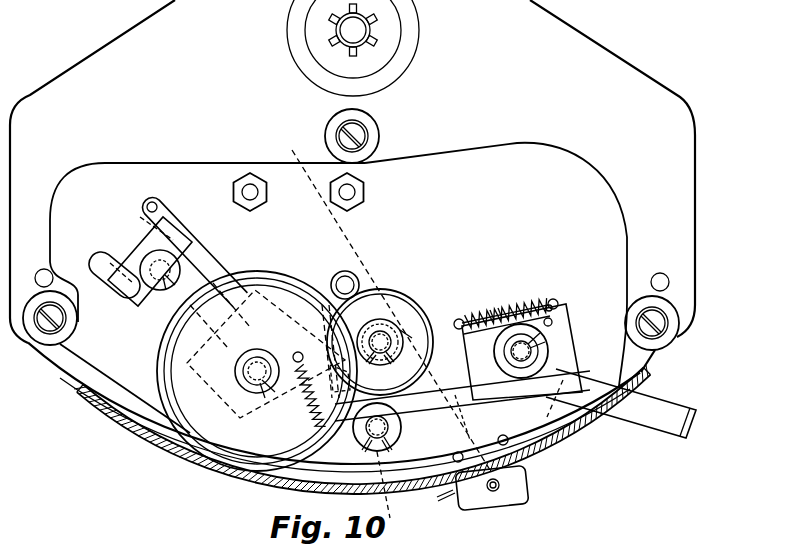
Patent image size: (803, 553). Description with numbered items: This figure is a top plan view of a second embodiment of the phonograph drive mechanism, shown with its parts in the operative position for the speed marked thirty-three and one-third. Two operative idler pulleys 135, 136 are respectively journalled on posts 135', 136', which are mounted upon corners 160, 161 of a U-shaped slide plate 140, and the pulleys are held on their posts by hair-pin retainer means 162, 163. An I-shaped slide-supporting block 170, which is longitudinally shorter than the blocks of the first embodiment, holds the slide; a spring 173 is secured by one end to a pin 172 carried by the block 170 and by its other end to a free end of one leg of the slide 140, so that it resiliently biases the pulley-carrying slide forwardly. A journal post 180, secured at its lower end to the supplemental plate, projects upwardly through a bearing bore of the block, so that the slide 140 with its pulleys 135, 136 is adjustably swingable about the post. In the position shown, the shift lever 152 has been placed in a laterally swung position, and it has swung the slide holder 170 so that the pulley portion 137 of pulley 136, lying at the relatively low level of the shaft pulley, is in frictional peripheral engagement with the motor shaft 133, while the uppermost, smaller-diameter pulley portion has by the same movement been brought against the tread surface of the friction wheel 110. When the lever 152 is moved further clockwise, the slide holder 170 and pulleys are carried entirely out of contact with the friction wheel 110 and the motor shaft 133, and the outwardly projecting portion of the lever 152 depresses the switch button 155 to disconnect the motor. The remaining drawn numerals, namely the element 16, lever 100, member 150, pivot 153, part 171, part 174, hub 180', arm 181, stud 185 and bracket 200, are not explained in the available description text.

The axis line 16 is at (318, 146).
The lever 100 is at (215, 262).
The friction wheel 110 is at (320, 326).
The motor shaft 133 is at (342, 272).
The idler pulley 135 is at (400, 427).
The post 135' is at (357, 440).
The idler pulley 136 is at (406, 305).
The post 136' is at (430, 311).
The pulley portion 137 is at (380, 325).
The slide plate 140 is at (451, 364).
The slide plate 150 is at (505, 352).
The shift lever 152 is at (612, 422).
The pivot pin 153 is at (552, 320).
The switch button 155 is at (500, 485).
The corner 160 is at (376, 320).
The corner 161 is at (393, 497).
The hair-pin retainer means 162 is at (380, 447).
The hair-pin retainer means 163 is at (381, 354).
The slide-supporting block 170 is at (502, 312).
The spring coil 171 is at (492, 305).
The pin 172 is at (455, 318).
The spring 173 is at (498, 308).
The anchor pin 174 is at (562, 300).
The journal post 180 is at (547, 349).
The roller hub 180' is at (566, 347).
The arm 181 is at (515, 380).
The stud 185 is at (549, 303).
The bracket 200 is at (487, 502).